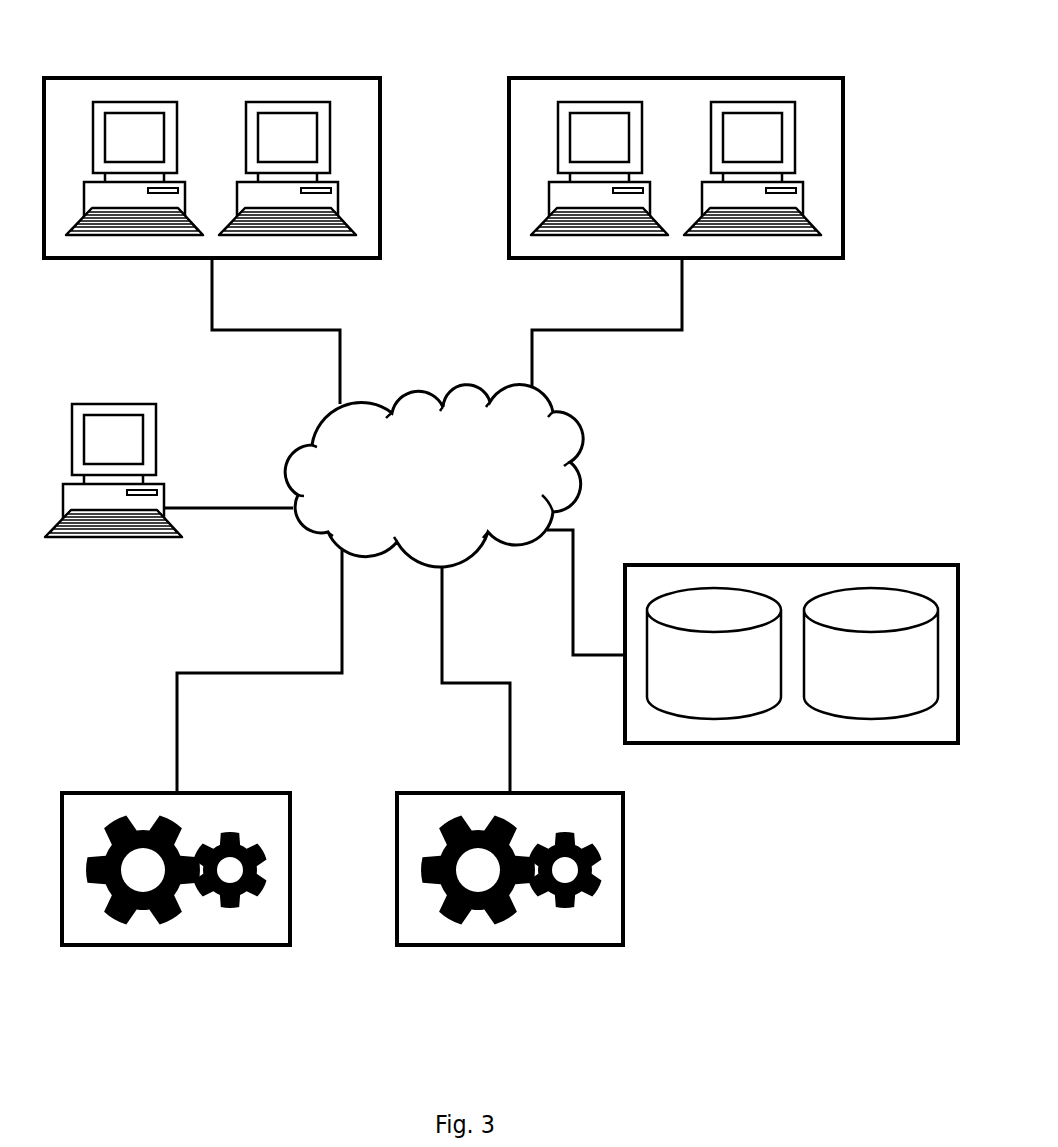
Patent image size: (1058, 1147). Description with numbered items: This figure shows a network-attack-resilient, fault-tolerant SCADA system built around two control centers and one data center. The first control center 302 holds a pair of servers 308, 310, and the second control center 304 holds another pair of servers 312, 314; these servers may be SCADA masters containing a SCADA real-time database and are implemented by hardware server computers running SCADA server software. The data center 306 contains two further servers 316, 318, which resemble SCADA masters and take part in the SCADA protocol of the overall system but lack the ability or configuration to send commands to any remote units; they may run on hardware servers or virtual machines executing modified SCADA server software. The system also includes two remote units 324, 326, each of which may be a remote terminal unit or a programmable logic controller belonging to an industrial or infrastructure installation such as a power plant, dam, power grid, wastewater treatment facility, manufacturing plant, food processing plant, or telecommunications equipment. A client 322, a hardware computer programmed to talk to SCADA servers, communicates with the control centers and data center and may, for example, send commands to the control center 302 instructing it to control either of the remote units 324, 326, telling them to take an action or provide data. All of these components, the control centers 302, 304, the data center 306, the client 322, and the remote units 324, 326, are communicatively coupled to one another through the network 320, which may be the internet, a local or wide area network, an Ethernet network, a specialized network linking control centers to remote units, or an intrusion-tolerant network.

The control center 302 is at (142, 258).
The control center 304 is at (742, 258).
The data center 306 is at (858, 743).
The server 308 is at (138, 103).
The server 310 is at (285, 103).
The server 312 is at (598, 103).
The server 314 is at (750, 103).
The server 316 is at (713, 588).
The server 318 is at (865, 588).
The network 320 is at (455, 385).
The client 322 is at (155, 440).
The remote unit 324 is at (290, 830).
The remote unit 326 is at (397, 905).